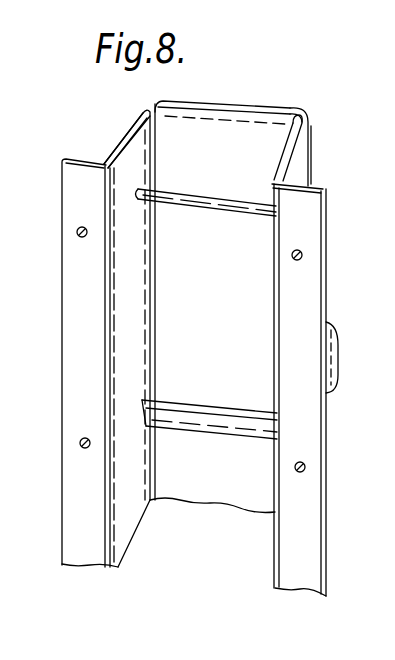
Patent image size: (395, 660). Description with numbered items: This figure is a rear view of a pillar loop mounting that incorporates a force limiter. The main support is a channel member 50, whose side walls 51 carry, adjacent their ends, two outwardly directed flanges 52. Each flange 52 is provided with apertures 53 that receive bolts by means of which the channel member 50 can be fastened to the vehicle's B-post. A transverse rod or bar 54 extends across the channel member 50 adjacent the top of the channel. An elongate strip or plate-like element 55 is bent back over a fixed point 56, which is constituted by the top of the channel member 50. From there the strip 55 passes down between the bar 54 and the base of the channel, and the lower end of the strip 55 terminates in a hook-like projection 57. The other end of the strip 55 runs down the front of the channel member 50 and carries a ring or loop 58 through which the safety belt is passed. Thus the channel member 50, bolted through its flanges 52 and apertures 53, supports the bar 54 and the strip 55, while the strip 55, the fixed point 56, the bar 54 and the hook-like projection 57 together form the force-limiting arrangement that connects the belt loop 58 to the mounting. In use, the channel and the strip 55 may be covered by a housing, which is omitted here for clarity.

The channel member 50 is at (313, 156).
The side walls 51 is at (130, 133).
The outwardly directed flanges 52 is at (65, 177).
The apertures 53 is at (305, 253).
The transverse rod or bar 54 is at (203, 198).
The elongate strip or plate-like element 55 is at (265, 110).
The fixed point 56 is at (310, 128).
The hook-like projection 57 is at (200, 413).
The ring or loop 58 is at (337, 363).